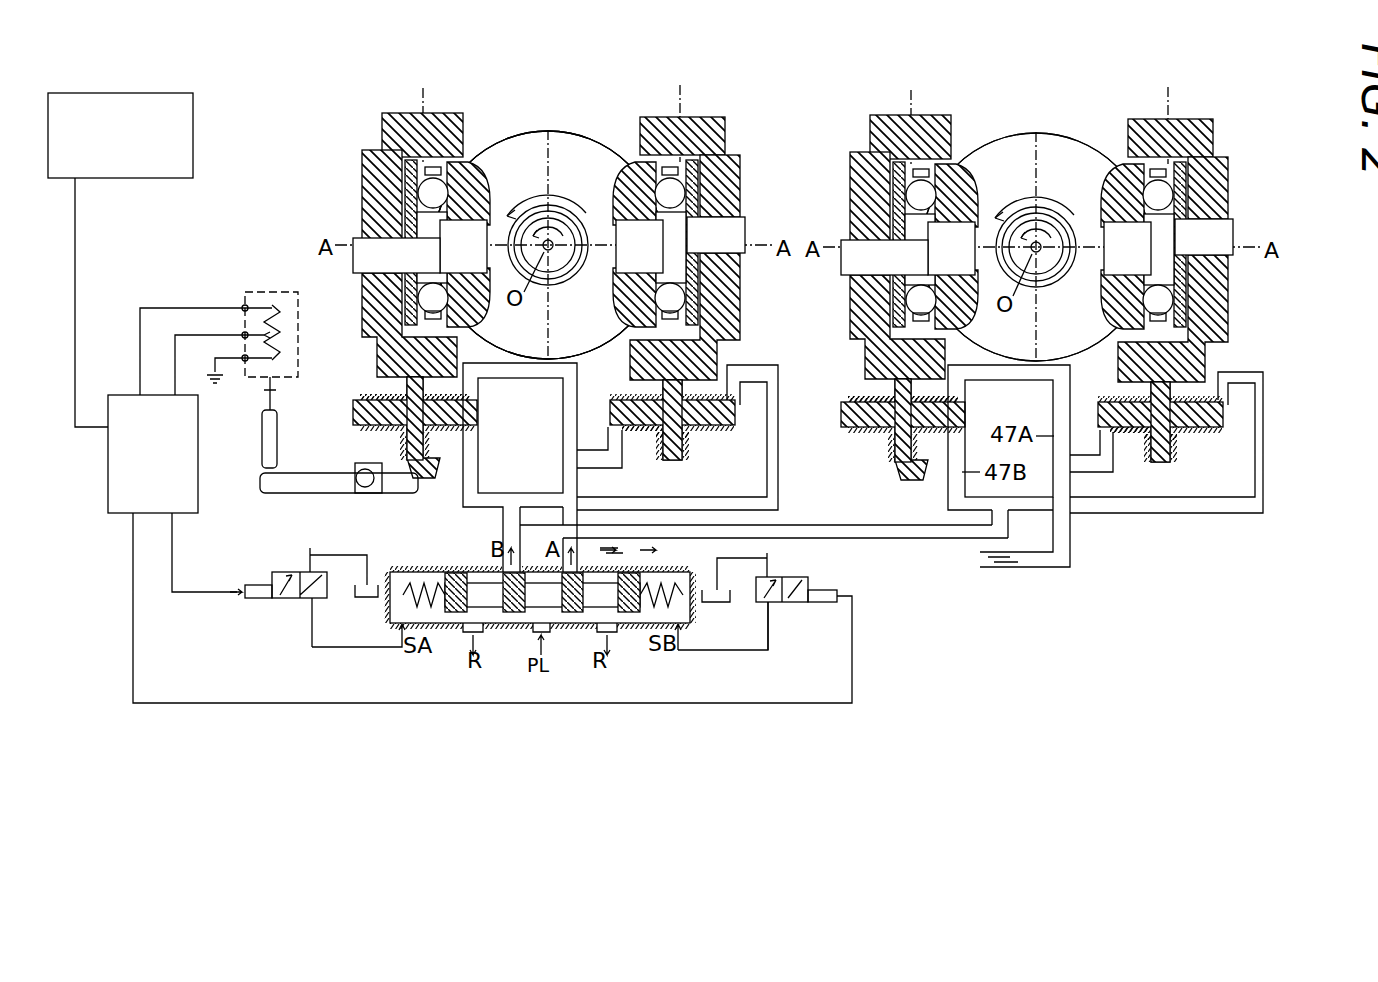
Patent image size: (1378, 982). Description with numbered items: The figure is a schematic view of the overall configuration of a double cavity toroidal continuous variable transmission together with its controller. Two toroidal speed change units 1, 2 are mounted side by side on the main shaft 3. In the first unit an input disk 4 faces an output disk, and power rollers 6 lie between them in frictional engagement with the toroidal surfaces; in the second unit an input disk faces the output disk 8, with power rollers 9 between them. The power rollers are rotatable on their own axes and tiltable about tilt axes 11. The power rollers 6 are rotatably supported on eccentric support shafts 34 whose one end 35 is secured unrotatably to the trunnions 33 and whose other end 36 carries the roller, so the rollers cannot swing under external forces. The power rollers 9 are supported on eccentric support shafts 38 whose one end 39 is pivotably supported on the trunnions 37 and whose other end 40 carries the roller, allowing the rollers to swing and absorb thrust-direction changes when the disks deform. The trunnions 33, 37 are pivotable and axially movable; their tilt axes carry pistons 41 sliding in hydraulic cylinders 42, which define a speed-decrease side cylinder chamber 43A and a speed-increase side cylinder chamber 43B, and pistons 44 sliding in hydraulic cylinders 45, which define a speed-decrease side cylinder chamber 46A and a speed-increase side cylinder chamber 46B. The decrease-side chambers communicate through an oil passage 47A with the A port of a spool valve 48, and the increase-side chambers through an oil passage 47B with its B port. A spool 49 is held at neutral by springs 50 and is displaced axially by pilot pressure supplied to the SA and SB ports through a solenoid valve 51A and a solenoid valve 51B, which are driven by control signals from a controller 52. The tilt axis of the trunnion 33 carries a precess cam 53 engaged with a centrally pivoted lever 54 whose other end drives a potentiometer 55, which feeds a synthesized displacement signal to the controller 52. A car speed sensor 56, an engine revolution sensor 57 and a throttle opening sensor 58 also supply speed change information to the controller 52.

The toroidal speed change unit 1 is at (513, 105).
The toroidal speed change unit 2 is at (1000, 105).
The main shaft 3 is at (572, 200).
The input disk 4 is at (558, 160).
The power rollers 6 is at (466, 180).
The output disk 8 is at (1046, 160).
The power rollers 9 is at (955, 185).
The tilt axes 11 is at (425, 92).
The trunnions 33 is at (400, 130).
The support shafts 34 is at (410, 225).
The one end 35 is at (362, 258).
The other end 36 is at (480, 228).
The trunnions 37 is at (888, 130).
The support shafts 38 is at (898, 232).
The one end 39 is at (850, 265).
The other end 40 is at (968, 232).
The pistons 41 is at (352, 410).
The hydraulic cylinders 42 is at (352, 430).
The speed-decrease side cylinder chamber 43A is at (385, 395).
The speed-increase side cylinder chamber 43B is at (385, 435).
The pistons 44 is at (838, 418).
The hydraulic cylinders 45 is at (836, 432).
The speed-decrease side cylinder chamber 46A is at (875, 398).
The speed-increase side cylinder chamber 46B is at (878, 440).
The oil passage 47A is at (570, 436).
The oil passage 47B is at (538, 500).
The spool valve 48 is at (437, 632).
The spool 49 is at (513, 615).
The springs 50 is at (420, 580).
The solenoid valve 51A is at (280, 572).
The solenoid valve 51B is at (800, 580).
The controller 52 is at (180, 455).
The precess cam 53 is at (437, 478).
The lever 54 is at (325, 493).
The potentiometer 55 is at (270, 292).
The car speed sensor 56 is at (120, 135).
The engine revolution sensor 57 is at (120, 135).
The throttle opening sensor 58 is at (120, 135).